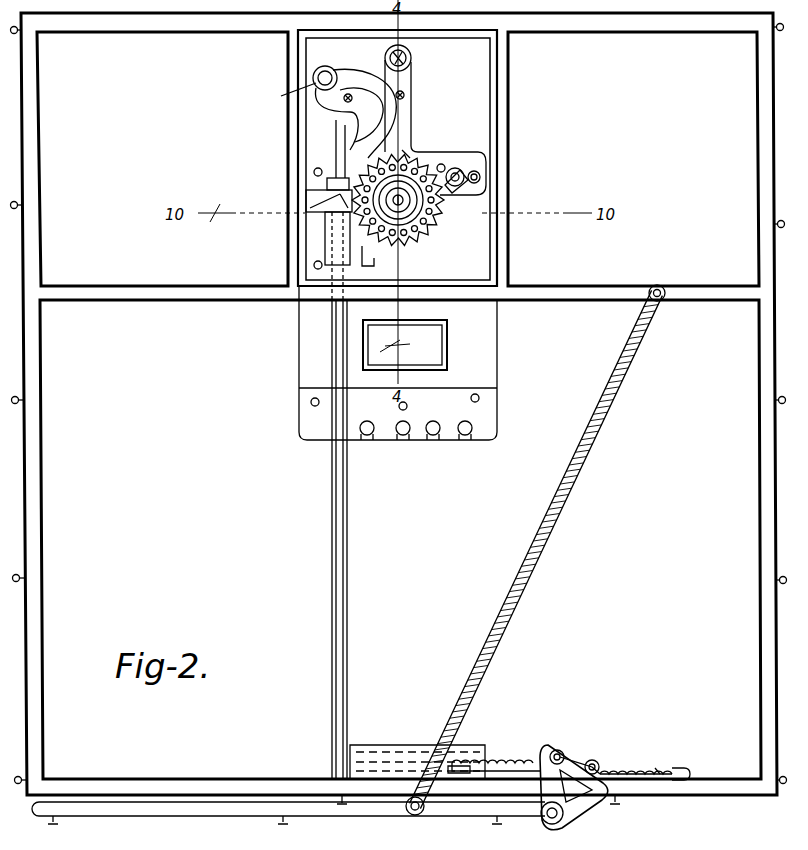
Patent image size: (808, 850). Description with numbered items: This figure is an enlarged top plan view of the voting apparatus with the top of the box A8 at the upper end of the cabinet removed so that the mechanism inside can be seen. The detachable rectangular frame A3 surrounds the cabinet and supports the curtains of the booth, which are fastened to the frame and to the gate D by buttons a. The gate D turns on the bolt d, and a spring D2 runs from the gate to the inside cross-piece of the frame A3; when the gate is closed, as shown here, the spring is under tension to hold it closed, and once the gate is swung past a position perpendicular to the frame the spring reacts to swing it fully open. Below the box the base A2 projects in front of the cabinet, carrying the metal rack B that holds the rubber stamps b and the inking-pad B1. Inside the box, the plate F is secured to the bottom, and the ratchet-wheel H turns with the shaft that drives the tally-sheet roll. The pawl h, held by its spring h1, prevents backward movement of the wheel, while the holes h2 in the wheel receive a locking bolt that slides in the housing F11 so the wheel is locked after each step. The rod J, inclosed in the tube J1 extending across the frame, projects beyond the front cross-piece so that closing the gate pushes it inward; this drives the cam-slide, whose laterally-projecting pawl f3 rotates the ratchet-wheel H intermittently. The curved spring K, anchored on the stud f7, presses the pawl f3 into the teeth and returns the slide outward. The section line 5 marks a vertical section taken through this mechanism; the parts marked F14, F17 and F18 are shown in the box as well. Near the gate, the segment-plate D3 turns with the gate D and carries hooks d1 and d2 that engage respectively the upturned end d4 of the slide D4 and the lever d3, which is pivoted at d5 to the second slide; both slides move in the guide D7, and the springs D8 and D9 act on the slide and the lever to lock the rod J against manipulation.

The rectangular frame A3 is at (674, 28).
The buttons a is at (760, 410).
The box A8 is at (397, 158).
The ratchet-wheel H is at (402, 200).
The plate F is at (416, 124).
The pawl arm F14 is at (430, 160).
The pawl h is at (462, 188).
The spring h1 is at (476, 170).
The holes h2 is at (406, 146).
The curved spring K is at (366, 66).
The stud f7 is at (289, 96).
The section line 5 is at (336, 147).
The block F18 is at (327, 183).
The housing F11 is at (306, 205).
The bracket F17 is at (325, 242).
The pawl f3 is at (376, 255).
The base A2 is at (398, 370).
The inking-pad B1 is at (425, 345).
The metal rack B is at (435, 403).
The rubber stamps b is at (380, 443).
The rod J is at (304, 302).
The tube J1 is at (330, 500).
The spring D2 is at (548, 551).
The guide D7 is at (386, 750).
The gate D is at (326, 817).
The spring D8 is at (490, 746).
The slide D4 is at (497, 757).
The spring D9 is at (657, 755).
The segment-plate D3 is at (574, 804).
The hook d2 is at (548, 749).
The pivotal connection d5 is at (580, 758).
The upturned end d4 is at (562, 756).
The lever d3 is at (598, 762).
The hook d1 is at (682, 740).
The bolt d is at (543, 820).